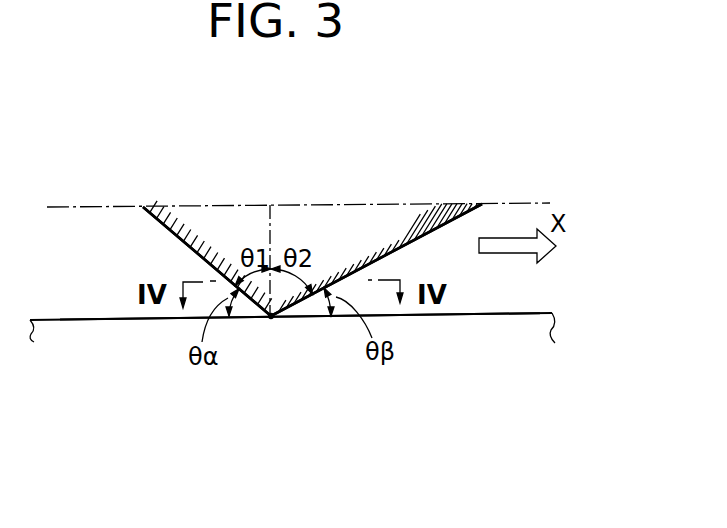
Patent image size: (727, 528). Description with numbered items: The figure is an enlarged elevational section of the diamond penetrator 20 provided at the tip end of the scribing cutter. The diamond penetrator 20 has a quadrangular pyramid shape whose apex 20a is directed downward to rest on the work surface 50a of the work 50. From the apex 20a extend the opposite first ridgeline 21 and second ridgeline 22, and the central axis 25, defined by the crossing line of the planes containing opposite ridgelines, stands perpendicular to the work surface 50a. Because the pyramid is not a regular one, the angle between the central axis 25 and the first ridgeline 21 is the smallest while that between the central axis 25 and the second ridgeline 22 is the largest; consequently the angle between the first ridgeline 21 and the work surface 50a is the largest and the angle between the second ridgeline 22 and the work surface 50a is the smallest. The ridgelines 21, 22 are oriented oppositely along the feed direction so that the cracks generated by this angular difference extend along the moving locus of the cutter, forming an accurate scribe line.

The diamond penetrator 20 is at (413, 203).
The first ridgeline 21 is at (167, 230).
The second ridgeline 22 is at (437, 228).
The central axis 25 is at (268, 222).
The apex 20a is at (272, 320).
The work 50 is at (482, 327).
The work surface 50a is at (512, 312).